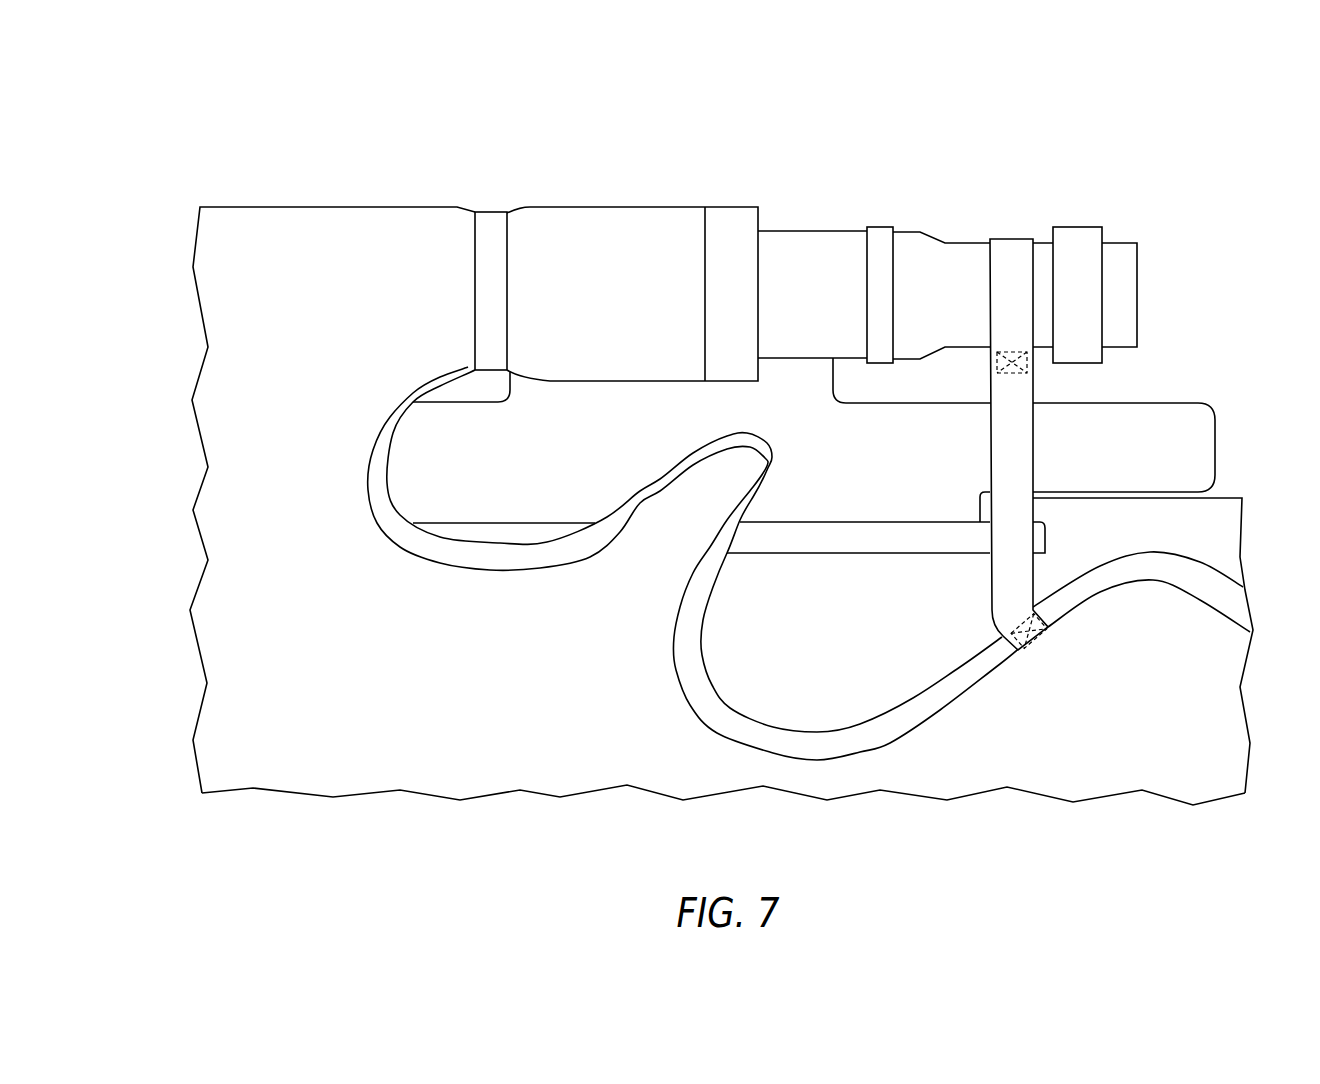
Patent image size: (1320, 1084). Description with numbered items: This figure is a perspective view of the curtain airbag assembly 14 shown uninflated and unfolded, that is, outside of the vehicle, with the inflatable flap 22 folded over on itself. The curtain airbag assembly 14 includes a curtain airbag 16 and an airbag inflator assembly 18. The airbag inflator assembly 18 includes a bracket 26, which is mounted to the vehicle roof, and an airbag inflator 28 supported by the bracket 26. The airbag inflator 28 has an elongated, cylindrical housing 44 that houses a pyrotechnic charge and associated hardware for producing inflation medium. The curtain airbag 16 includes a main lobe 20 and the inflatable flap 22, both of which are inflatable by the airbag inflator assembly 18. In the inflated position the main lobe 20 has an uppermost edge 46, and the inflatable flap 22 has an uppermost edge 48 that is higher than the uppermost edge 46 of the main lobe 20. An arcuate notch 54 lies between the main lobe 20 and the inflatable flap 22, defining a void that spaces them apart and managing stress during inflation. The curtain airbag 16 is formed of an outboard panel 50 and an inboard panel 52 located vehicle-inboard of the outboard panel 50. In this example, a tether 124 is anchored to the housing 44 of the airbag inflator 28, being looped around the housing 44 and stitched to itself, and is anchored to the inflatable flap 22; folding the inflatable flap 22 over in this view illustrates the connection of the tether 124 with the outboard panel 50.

The curtain airbag assembly 14 is at (390, 134).
The uppermost edge of the main lobe 46 is at (308, 207).
The airbag inflator 28 is at (578, 218).
The airbag inflator assembly 18 is at (713, 186).
The housing 44 is at (827, 230).
The bracket 26 is at (1147, 402).
The tether 124 is at (1013, 424).
The notch 54 is at (508, 505).
The main lobe 20 is at (245, 593).
The curtain airbag 16 is at (246, 676).
The inboard panel 52 is at (310, 767).
The uppermost edge of the inflatable flap 48 is at (717, 735).
The inflatable flap 22 is at (807, 697).
The outboard panel 50 is at (880, 663).